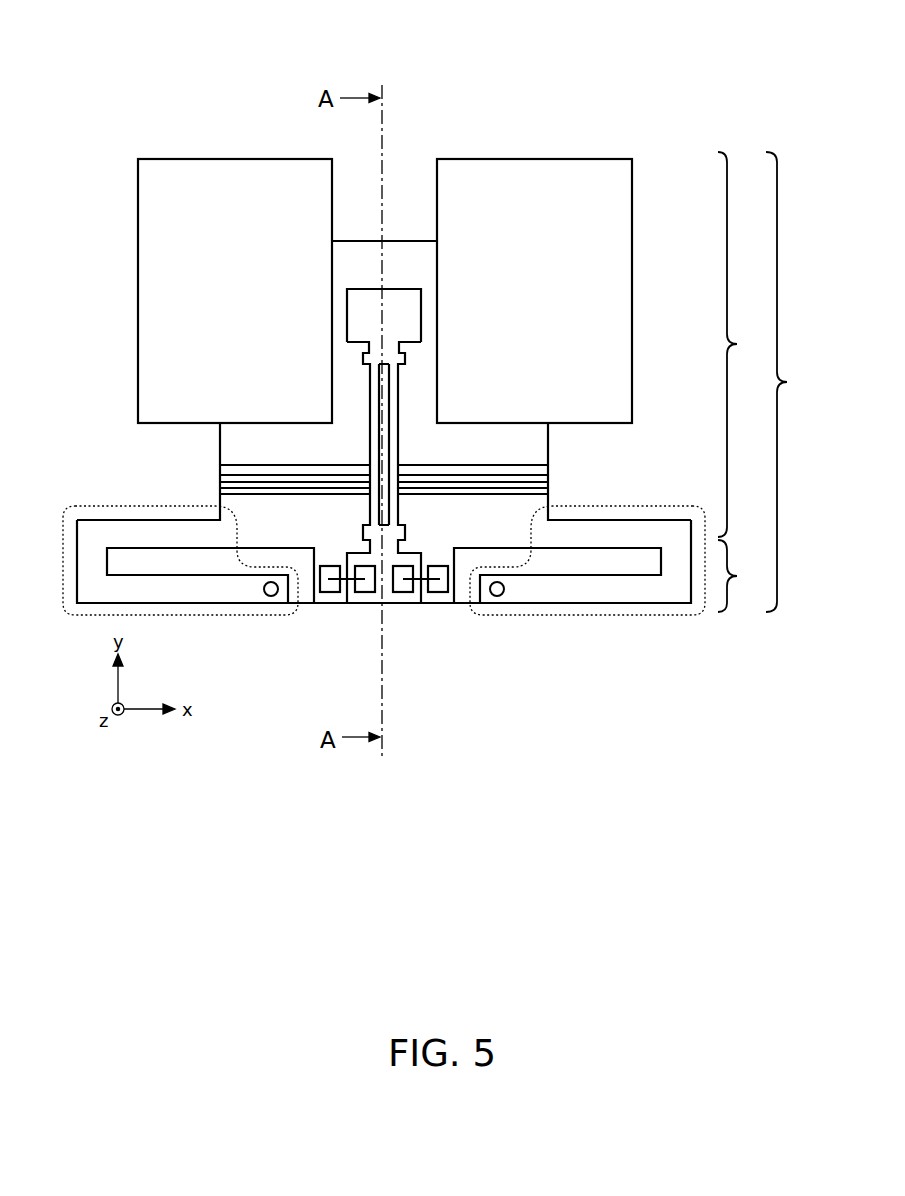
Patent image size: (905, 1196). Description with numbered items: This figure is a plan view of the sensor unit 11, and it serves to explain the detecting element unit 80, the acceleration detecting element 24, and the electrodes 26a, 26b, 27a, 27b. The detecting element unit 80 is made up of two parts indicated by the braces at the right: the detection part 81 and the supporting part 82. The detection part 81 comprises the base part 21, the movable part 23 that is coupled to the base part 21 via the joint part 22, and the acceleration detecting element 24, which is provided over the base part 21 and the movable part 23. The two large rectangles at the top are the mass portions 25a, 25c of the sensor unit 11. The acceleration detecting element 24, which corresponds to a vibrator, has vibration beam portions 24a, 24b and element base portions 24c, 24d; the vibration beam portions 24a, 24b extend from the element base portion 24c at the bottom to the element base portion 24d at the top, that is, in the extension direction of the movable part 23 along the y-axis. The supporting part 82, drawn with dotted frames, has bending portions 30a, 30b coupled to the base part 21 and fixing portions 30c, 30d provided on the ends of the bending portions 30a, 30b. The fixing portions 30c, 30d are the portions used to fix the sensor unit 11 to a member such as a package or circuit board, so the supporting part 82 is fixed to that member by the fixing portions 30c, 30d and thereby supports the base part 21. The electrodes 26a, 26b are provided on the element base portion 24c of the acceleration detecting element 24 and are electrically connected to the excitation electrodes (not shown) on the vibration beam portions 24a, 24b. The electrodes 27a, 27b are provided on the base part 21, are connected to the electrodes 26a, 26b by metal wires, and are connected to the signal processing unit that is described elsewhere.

The sensor unit 11 is at (390, 54).
The mass portion 25a is at (210, 158).
The mass portion 25c is at (507, 158).
The element base portion 24d is at (400, 312).
The acceleration detecting element 24 is at (416, 404).
The vibration beam portion 24a is at (368, 461).
The vibration beam portion 24b is at (404, 461).
The element base portion 24c is at (380, 593).
The movable part 23 is at (240, 444).
The joint part 22 is at (550, 477).
The base part 21 is at (467, 522).
The bending portion 30a is at (90, 550).
The bending portion 30b is at (682, 550).
The fixing portion 30c is at (268, 597).
The fixing portion 30d is at (500, 597).
The electrode 27a is at (328, 603).
The electrode 26a is at (367, 603).
The electrode 26b is at (403, 603).
The electrode 27b is at (437, 603).
The detection part 81 is at (746, 344).
The supporting part 82 is at (746, 576).
The detecting element unit 80 is at (796, 382).